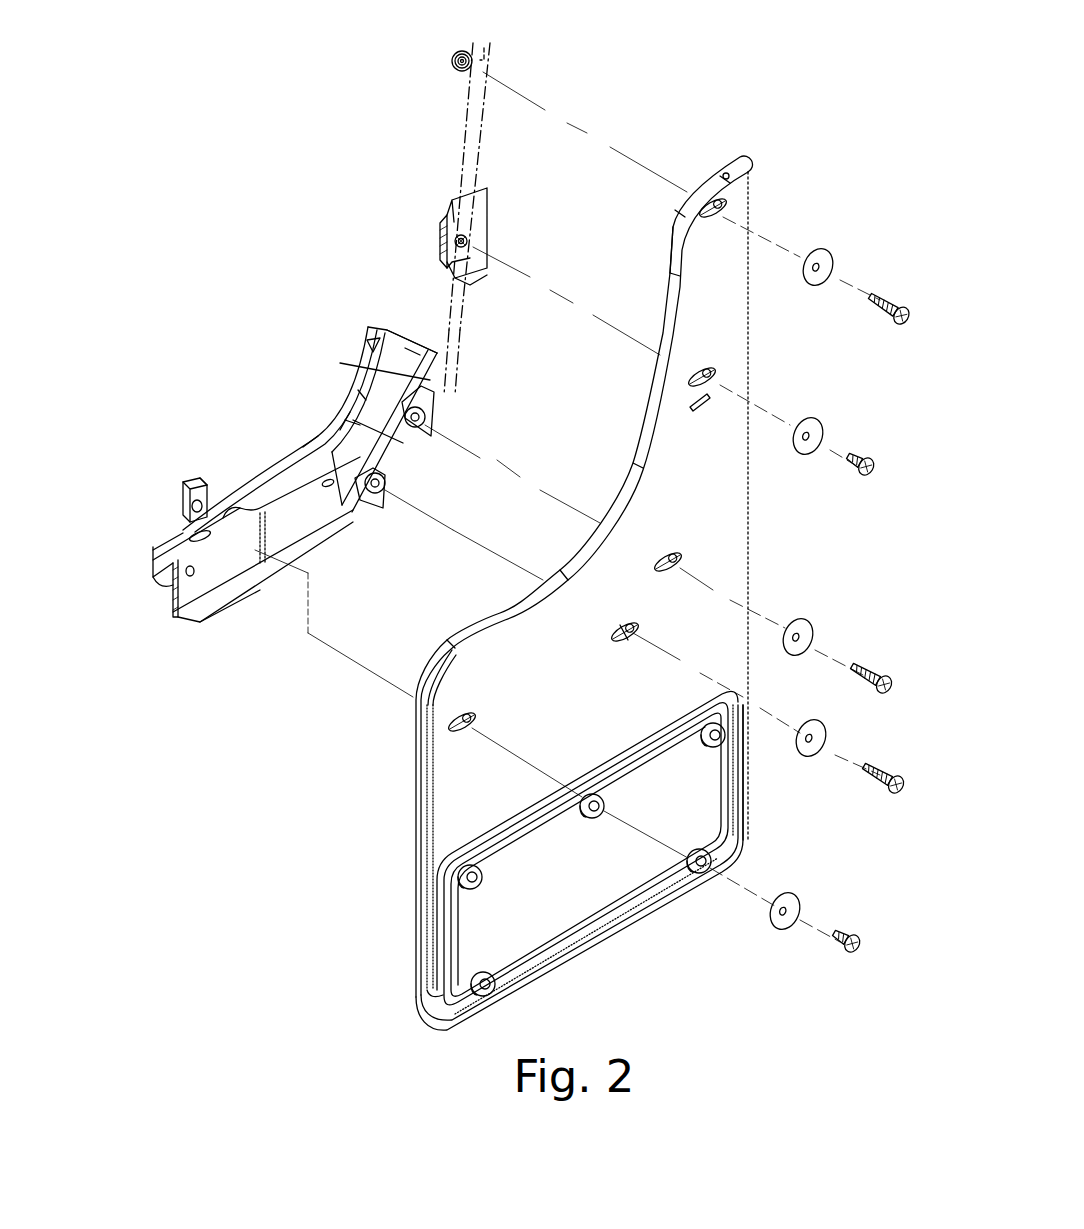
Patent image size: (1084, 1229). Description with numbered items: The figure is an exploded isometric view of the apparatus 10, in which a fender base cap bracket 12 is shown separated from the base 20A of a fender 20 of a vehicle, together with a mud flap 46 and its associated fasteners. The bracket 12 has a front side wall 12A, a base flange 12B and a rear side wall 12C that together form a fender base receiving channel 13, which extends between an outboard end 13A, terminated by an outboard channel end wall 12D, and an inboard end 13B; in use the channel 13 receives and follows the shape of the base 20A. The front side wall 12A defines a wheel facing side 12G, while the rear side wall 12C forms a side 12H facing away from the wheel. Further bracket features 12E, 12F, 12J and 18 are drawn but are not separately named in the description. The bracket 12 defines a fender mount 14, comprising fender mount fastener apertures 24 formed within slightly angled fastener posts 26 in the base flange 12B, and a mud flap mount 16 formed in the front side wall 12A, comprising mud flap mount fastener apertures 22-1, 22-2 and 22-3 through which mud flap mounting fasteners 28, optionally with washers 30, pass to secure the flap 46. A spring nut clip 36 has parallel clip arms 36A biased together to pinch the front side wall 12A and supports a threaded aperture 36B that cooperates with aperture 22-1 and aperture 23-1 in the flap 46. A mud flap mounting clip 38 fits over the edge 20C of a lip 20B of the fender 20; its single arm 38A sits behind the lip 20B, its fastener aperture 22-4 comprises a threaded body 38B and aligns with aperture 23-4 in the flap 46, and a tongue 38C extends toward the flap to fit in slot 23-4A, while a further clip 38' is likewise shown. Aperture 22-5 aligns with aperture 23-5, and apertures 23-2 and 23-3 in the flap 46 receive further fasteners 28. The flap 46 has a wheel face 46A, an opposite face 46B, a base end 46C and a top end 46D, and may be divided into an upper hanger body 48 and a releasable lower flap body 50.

The apparatus 10 is at (290, 116).
The fender base cap bracket 12 is at (307, 508).
The front side wall 12A is at (338, 508).
The base flange 12B is at (380, 393).
The rear side wall 12C is at (345, 390).
The outboard channel end wall 12D is at (397, 325).
The bracket upper end 12E is at (437, 350).
The bracket end plate 12F is at (176, 600).
The wheel facing side 12G is at (318, 558).
The side facing away from the wheel 12H is at (216, 484).
The bracket top flange 12J is at (380, 330).
The fender base receiving channel 13 is at (362, 450).
The outboard end of channel 13A is at (412, 345).
The inboard end of channel 13B is at (158, 562).
The fender mount 14 is at (428, 487).
The mud flap mount 16 is at (214, 607).
The gusset 18 is at (335, 410).
The fender 20 is at (488, 163).
The fender base 20A is at (466, 392).
The fender lip 20B is at (473, 73).
The lip edge 20C is at (463, 52).
The mud flap mount fastener aperture 22-1 is at (176, 615).
The second fastener opening 22-2 is at (385, 490).
The third fastener opening 22-3 is at (425, 418).
The clip fastener aperture 22-4 is at (466, 238).
The flange aperture 22-5 is at (490, 52).
The mud flap aperture 23-1 is at (472, 722).
The second clip 23-2 is at (625, 627).
The third clip 23-3 is at (672, 555).
The mud flap aperture 23-4 is at (708, 372).
The mud flap slot 23-4A is at (698, 408).
The mud flap aperture 23-5 is at (726, 203).
The fender mount fastener apertures 24 is at (190, 538).
The fastener posts 26 is at (327, 483).
The mud flap mounting fasteners 28 is at (910, 314).
The washers 30 is at (832, 262).
The spring nut clip 36 is at (183, 488).
The clip arms 36A is at (180, 503).
The threaded aperture 36B is at (198, 500).
The mud flap mounting clip 38 is at (514, 231).
The upper boss 38' is at (421, 71).
The clip arm 38A is at (462, 275).
The threaded body 38B is at (468, 244).
The tongue 38C is at (478, 262).
The mud flap 46 is at (445, 802).
The wheel face 46A is at (445, 838).
The outer face 46B is at (408, 784).
The base end 46C is at (633, 945).
The top end 46D is at (726, 174).
The upper hanger body 48 is at (710, 273).
The lower flap body 50 is at (752, 820).